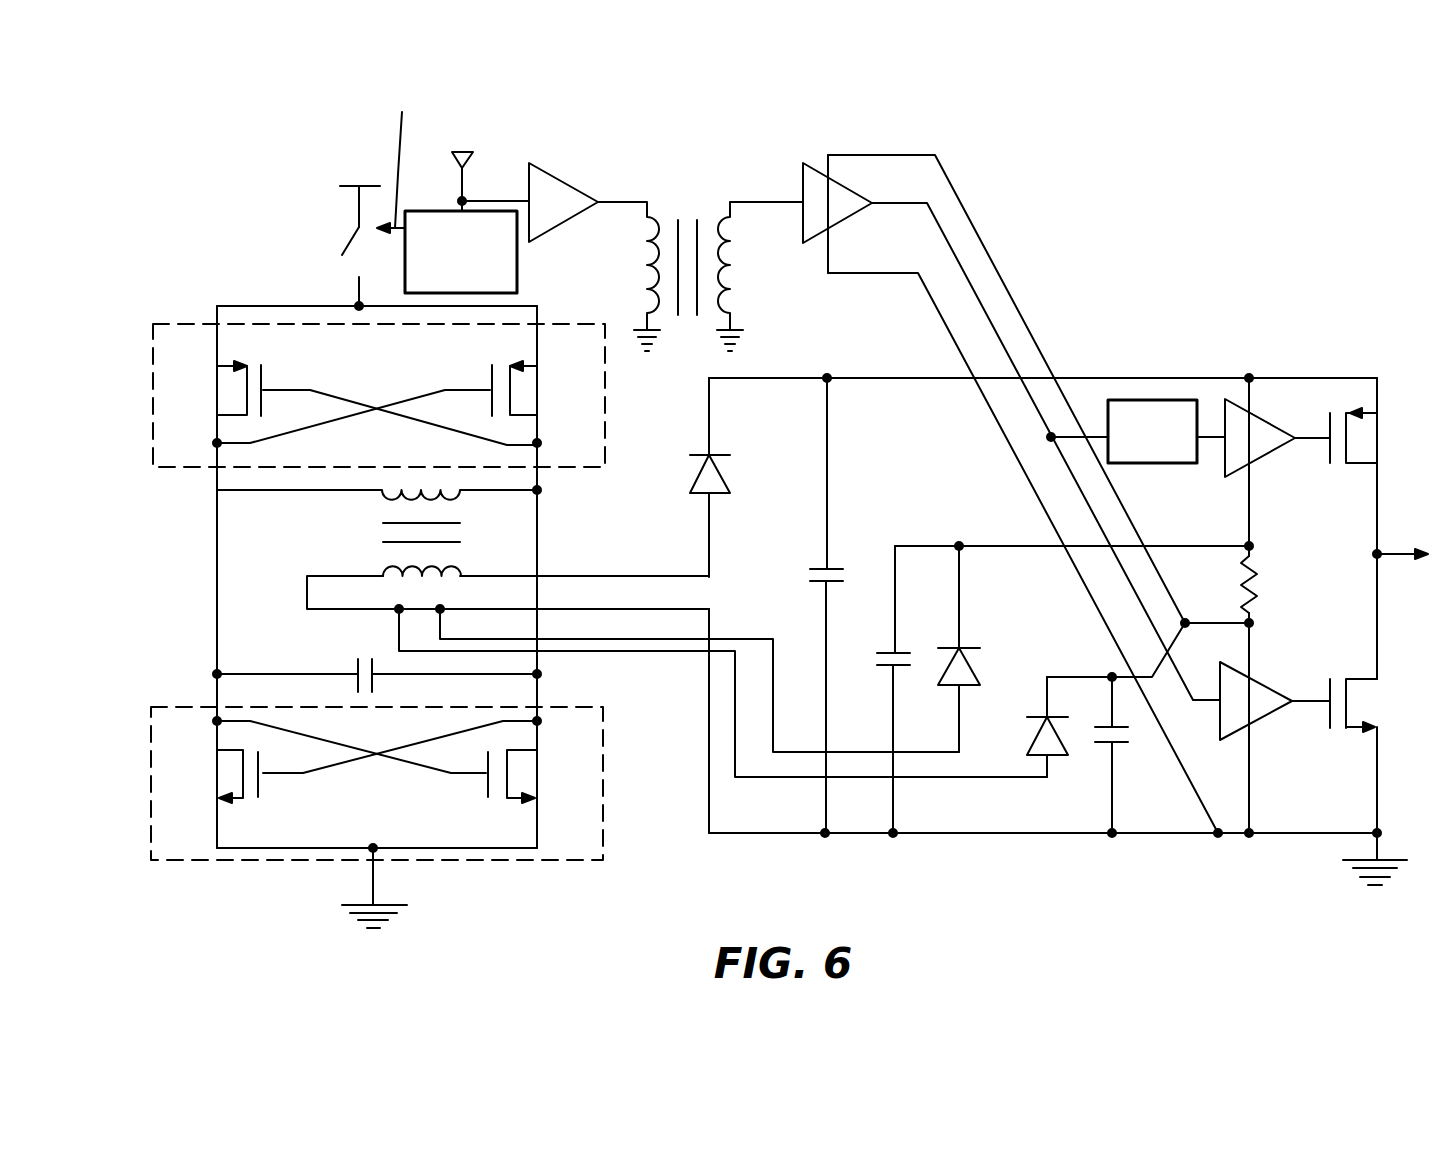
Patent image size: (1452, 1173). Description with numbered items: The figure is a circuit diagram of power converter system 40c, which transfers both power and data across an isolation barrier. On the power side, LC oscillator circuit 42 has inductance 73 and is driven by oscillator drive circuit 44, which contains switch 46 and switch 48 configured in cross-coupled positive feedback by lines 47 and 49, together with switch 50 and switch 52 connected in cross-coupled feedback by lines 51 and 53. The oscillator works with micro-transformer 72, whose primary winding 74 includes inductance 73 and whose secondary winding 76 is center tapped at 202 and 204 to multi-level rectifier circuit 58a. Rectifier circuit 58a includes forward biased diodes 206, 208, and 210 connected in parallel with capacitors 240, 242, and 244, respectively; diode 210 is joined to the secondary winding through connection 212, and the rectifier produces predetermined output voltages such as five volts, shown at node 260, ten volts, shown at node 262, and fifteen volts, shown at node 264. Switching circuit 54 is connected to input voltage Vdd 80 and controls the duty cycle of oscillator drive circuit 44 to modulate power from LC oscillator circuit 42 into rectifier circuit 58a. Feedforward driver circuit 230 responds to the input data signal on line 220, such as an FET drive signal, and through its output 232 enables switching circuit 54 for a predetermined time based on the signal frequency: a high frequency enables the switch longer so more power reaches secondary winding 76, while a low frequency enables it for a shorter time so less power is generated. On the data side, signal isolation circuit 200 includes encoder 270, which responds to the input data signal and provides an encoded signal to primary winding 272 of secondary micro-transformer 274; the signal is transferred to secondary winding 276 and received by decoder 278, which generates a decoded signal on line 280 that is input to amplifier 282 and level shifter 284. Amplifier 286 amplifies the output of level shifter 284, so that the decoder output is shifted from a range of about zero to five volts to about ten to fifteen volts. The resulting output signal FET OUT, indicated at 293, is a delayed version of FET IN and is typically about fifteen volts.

The power converter system 40c is at (259, 186).
The LC oscillator circuit 42 is at (184, 578).
The oscillator drive circuit 44 is at (185, 322).
The switch QMP1 46 is at (264, 378).
The line 47 is at (334, 422).
The switch QMP2 48 is at (487, 378).
The line 49 is at (416, 422).
The switch QMN1 50 is at (265, 782).
The line 51 is at (341, 767).
The switch QMN2 52 is at (487, 787).
The line 53 is at (418, 768).
The switching circuit 54 is at (334, 242).
The multi-level rectifier circuit 58a is at (1007, 835).
The micro-transformer 72 is at (314, 540).
The inductance 73 is at (356, 673).
The primary winding 74 is at (383, 493).
The secondary winding 76 is at (385, 570).
The input voltage Vdd 80 is at (368, 158).
The signal isolation circuit 200 is at (1124, 231).
The center tap 202 is at (397, 607).
The center tap 204 is at (441, 607).
The diode 206 is at (1028, 742).
The diode 208 is at (975, 671).
The diode 210 is at (722, 476).
The diode connection line 212 is at (710, 532).
The line 220 is at (459, 197).
The feedforward driver circuit 230 is at (518, 280).
The driver output signal 232 is at (401, 162).
The capacitor 240 is at (1122, 744).
The capacitor 242 is at (888, 652).
The capacitor 244 is at (840, 568).
The resistor 260 is at (1253, 620).
The 10V supply node 262 is at (1251, 546).
The 15V supply node 264 is at (1247, 378).
The encoder 270 is at (557, 177).
The primary winding 272 is at (494, 199).
The secondary micro-transformer 274 is at (687, 165).
The secondary winding 276 is at (733, 266).
The decoder 278 is at (810, 165).
The line 280 is at (900, 206).
The amplifier 282 is at (1262, 719).
The level shifter 284 is at (1167, 464).
The amplifier 286 is at (1270, 426).
The output signal FET OUT 293 is at (1400, 551).